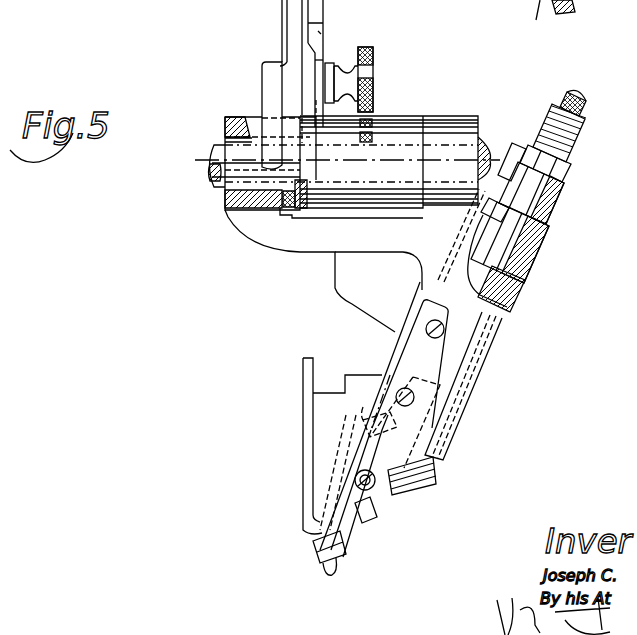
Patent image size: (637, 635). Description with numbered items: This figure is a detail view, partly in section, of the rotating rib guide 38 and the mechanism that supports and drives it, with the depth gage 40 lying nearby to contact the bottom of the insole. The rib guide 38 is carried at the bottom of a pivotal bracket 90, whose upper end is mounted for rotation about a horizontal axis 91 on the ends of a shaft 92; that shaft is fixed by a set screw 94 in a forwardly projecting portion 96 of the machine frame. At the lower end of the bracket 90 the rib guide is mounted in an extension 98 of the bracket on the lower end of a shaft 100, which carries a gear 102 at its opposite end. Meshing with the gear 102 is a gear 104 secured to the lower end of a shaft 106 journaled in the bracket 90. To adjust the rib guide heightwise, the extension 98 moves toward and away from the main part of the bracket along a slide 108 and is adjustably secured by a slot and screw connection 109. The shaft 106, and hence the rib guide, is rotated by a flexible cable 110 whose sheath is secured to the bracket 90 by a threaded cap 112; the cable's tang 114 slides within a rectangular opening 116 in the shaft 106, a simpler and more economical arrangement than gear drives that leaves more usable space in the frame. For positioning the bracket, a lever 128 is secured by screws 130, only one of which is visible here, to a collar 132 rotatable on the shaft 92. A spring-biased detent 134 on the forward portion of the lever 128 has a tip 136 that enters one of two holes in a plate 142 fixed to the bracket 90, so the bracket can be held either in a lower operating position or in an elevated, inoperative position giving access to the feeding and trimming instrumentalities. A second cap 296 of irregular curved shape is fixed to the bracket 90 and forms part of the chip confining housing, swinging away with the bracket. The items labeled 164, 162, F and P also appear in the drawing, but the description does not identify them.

The lever 128 is at (270, 71).
The tip of detent 136 is at (258, 63).
The plate 142 is at (262, 103).
The spring-biased detent 134 is at (373, 62).
The set screw 94 is at (366, 121).
The forwardly projecting portion of the machine frame 96 is at (410, 116).
The shaft 92 is at (487, 142).
The collar 132 is at (283, 212).
The horizontal axis 91 is at (205, 172).
The screws 130 is at (320, 212).
The pivotal bracket 90 is at (295, 253).
The flexible cable 110 is at (586, 105).
The threaded cap 112 is at (565, 190).
The tang 114 is at (545, 222).
The rectangular opening 116 is at (530, 265).
The shaft 106 is at (520, 290).
The slide 108 is at (420, 345).
The gear 104 is at (447, 434).
The gear 102 is at (363, 407).
The slot and screw connection 109 is at (355, 483).
The second cap 296 is at (303, 427).
The shaft 100 is at (386, 498).
The extension 98 is at (375, 508).
The depth gage 40 is at (318, 555).
The rotating rib guide 38 is at (333, 572).
The element 164 is at (530, 6).
The element 162 is at (536, 0).
The force F is at (572, 6).
The pressure P is at (556, 12).